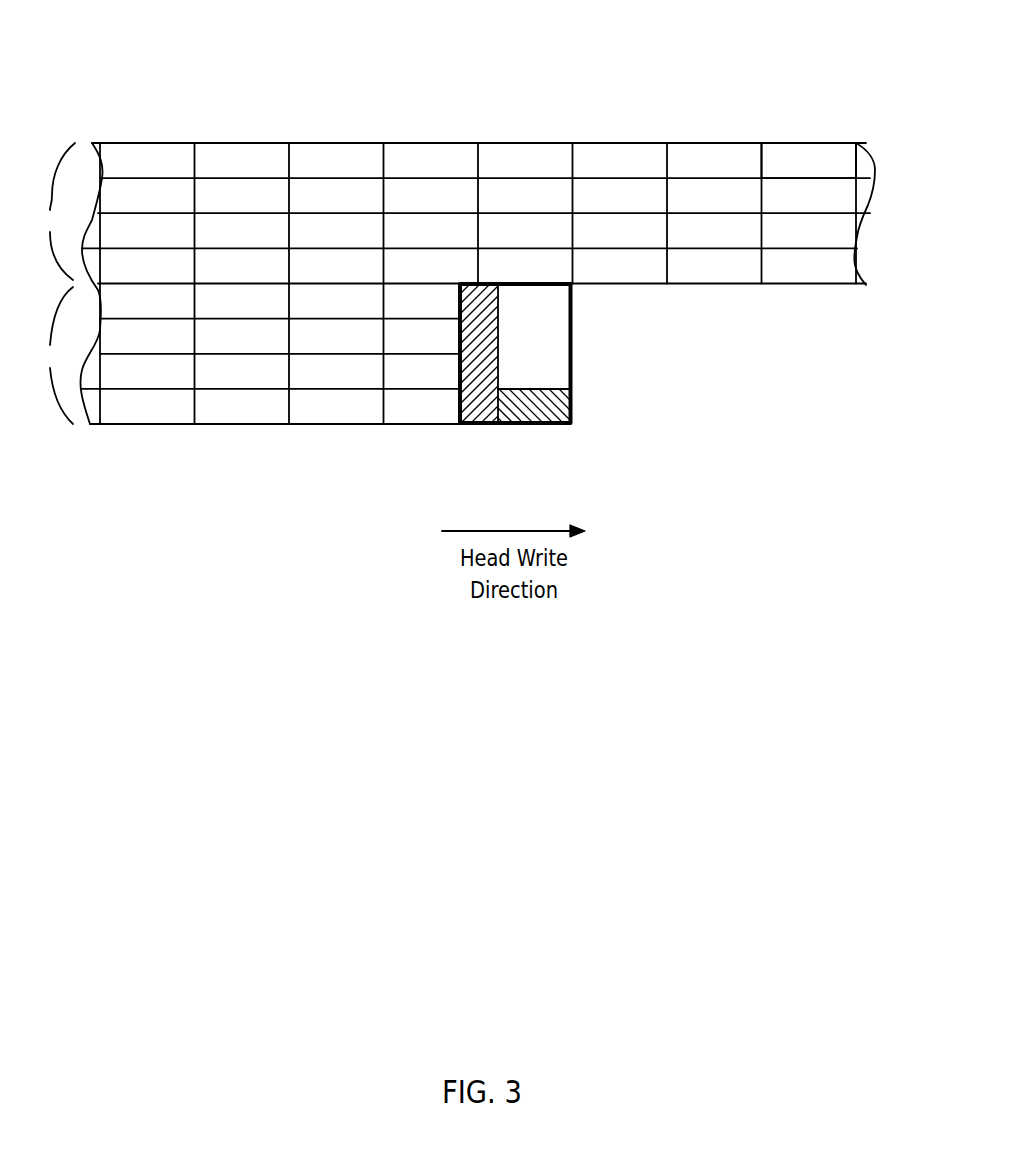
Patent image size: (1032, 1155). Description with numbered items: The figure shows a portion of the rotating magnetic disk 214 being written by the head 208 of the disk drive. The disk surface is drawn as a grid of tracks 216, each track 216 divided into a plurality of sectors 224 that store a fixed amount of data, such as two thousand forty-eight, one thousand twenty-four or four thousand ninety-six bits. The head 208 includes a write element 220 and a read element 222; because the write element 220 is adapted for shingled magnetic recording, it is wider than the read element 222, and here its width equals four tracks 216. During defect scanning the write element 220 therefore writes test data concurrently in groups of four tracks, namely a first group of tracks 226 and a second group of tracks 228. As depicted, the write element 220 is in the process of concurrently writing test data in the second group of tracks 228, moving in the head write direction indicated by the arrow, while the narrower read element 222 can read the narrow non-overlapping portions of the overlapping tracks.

The head 208 is at (517, 364).
The rotating magnetic disk 214 is at (330, 127).
The tracks 216 is at (876, 170).
The write element 220 is at (488, 408).
The read element 222 is at (530, 425).
The sectors 224 is at (725, 163).
The first group of tracks 226 is at (52, 211).
The second group of tracks 228 is at (51, 355).